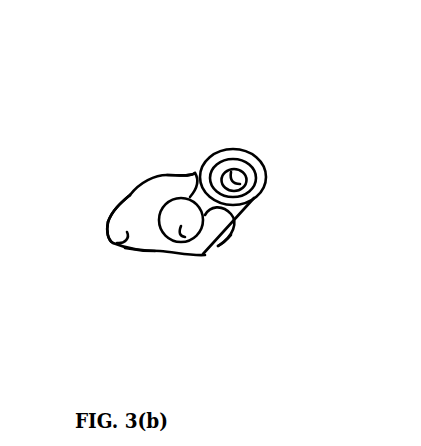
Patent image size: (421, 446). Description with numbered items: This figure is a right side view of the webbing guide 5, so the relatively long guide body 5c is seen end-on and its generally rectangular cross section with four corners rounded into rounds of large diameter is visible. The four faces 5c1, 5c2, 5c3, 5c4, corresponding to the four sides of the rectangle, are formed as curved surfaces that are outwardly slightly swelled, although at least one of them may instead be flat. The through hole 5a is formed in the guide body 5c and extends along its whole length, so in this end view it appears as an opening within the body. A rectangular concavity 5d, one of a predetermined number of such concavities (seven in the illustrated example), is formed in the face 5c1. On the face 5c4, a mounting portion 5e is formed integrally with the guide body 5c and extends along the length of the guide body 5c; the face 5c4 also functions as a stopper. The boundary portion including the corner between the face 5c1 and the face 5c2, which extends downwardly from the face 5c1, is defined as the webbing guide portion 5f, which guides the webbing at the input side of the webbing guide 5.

The webbing guide 5 is at (138, 167).
The through hole 5a is at (196, 255).
The guide body 5c is at (112, 243).
The face 5c1 is at (128, 195).
The face 5c2 is at (142, 252).
The face 5c3 is at (228, 243).
The face 5c4 is at (196, 171).
The rectangular concavity 5d is at (253, 202).
The mounting portion 5e is at (231, 151).
The webbing guide portion 5f is at (108, 232).